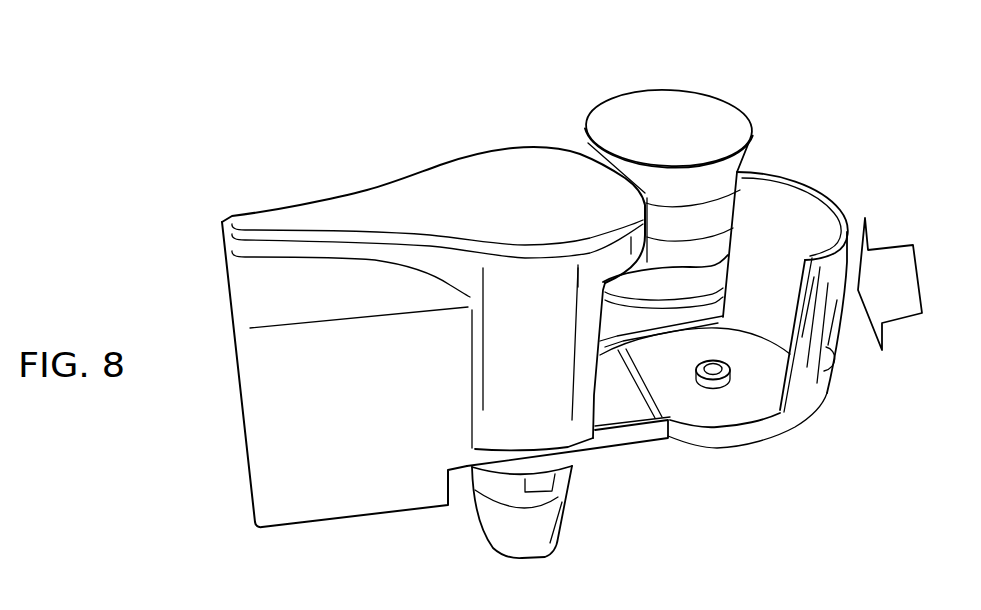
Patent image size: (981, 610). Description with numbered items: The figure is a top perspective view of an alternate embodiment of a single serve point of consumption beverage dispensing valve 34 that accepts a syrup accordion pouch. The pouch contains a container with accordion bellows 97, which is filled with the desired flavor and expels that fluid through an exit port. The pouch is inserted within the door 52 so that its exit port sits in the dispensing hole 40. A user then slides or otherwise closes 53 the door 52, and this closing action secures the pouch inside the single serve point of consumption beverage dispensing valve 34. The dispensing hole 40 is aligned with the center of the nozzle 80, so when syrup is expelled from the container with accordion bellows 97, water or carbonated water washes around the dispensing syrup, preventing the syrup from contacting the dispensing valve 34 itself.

The single serve point of consumption beverage dispensing valve 34 is at (317, 143).
The container with accordion bellows 97 is at (722, 104).
The door 52 is at (818, 188).
The closing of the door 53 is at (885, 322).
The dispensing hole 40 is at (725, 377).
The nozzle 80 is at (492, 545).